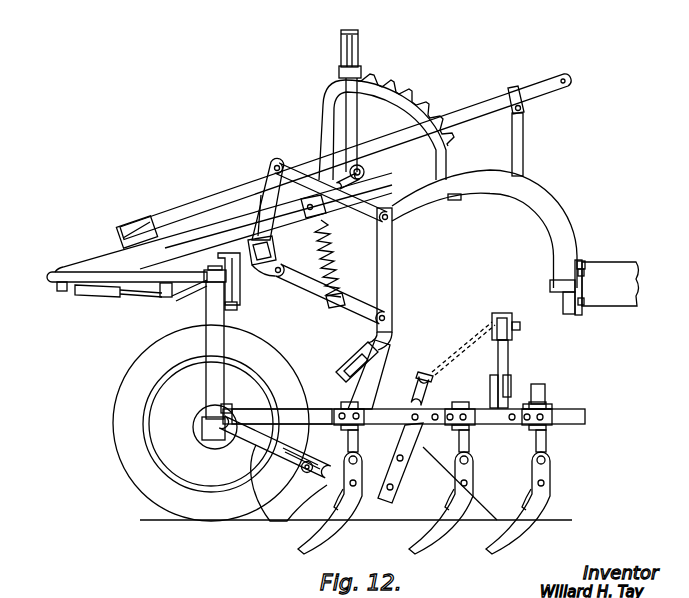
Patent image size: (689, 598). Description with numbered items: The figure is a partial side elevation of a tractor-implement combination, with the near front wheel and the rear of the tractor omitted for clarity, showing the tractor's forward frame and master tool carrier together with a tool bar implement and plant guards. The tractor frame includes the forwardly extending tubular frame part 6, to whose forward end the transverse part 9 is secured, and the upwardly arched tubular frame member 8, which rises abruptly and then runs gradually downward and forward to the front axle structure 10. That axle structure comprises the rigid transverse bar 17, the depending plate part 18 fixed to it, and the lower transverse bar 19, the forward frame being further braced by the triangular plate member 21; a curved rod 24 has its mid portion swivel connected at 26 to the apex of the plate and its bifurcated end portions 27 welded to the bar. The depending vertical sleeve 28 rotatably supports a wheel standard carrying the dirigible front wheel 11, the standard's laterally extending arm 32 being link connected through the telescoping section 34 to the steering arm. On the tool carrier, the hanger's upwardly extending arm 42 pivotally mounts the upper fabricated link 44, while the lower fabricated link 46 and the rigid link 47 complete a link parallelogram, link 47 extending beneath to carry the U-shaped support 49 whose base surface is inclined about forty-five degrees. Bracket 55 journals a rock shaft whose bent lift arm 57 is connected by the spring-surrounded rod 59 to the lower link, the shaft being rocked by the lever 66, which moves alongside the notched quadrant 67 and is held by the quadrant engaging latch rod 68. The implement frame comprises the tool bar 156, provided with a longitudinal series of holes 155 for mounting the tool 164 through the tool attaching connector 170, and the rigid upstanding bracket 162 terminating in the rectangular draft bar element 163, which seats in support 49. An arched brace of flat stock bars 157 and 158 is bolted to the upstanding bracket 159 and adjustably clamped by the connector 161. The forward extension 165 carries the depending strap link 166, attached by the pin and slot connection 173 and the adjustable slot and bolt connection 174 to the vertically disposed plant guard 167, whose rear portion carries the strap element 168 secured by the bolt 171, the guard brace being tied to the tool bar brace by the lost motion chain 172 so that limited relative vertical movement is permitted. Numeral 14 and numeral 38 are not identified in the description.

The forwardly extending tubular frame part 6 is at (617, 262).
The upwardly arched tubular frame members 8 is at (555, 216).
The transverse part 9 is at (563, 306).
The transverse front axle structure 10 is at (240, 303).
The dirigible front wheel 11 is at (120, 411).
The bracket 14 is at (550, 287).
The rigid transverse bar 17 is at (222, 258).
The rigid plate part 18 is at (243, 284).
The rigid transverse bar 19 is at (237, 308).
The triangular shaped plate member 21 is at (100, 256).
The curved rod 24 is at (52, 277).
The swivel connection 26 is at (60, 291).
The bifurcated end portions 27 is at (190, 298).
The depending vertical bearing or sleeve 28 is at (206, 385).
The laterally extending arm 32 is at (167, 297).
The telescoping link section 34 is at (96, 296).
The upper bar 38 is at (490, 107).
The upwardly extending hanger arm 42 is at (268, 178).
The upper fabricated link 44 is at (290, 168).
The lower fabricated link 46 is at (300, 281).
The rigid link 47 is at (392, 280).
The U-shaped part or support 49 is at (372, 346).
The upwardly extending bracket 55 is at (362, 188).
The crank or lift arm 57 is at (365, 174).
The rod 59 is at (334, 246).
The lever 66 is at (358, 33).
The notched quadrant 67 is at (386, 84).
The quadrant engaging latch rod 68 is at (340, 52).
The transverse holes 155 is at (510, 421).
The tool bar 156 is at (582, 413).
The flat stock brace bar 157 is at (509, 356).
The flat stock brace bar 158 is at (492, 375).
The upstanding bracket 159 is at (510, 380).
The connector 161 is at (508, 313).
The rigid upstanding bracket 162 is at (382, 384).
The draft bar element 163 is at (358, 357).
The tool 164 is at (333, 512).
The forward extension 165 is at (290, 409).
The depending strap link 166 is at (246, 438).
The plant guard or shield 167 is at (270, 500).
The strap element 168 is at (400, 473).
The tool attaching connector 170 is at (546, 402).
The securing bolt 171 is at (427, 372).
The chain or lost motion connector 172 is at (472, 346).
The pin and slot connection 173 is at (237, 399).
The adjustable slot and bolt connection 174 is at (306, 473).